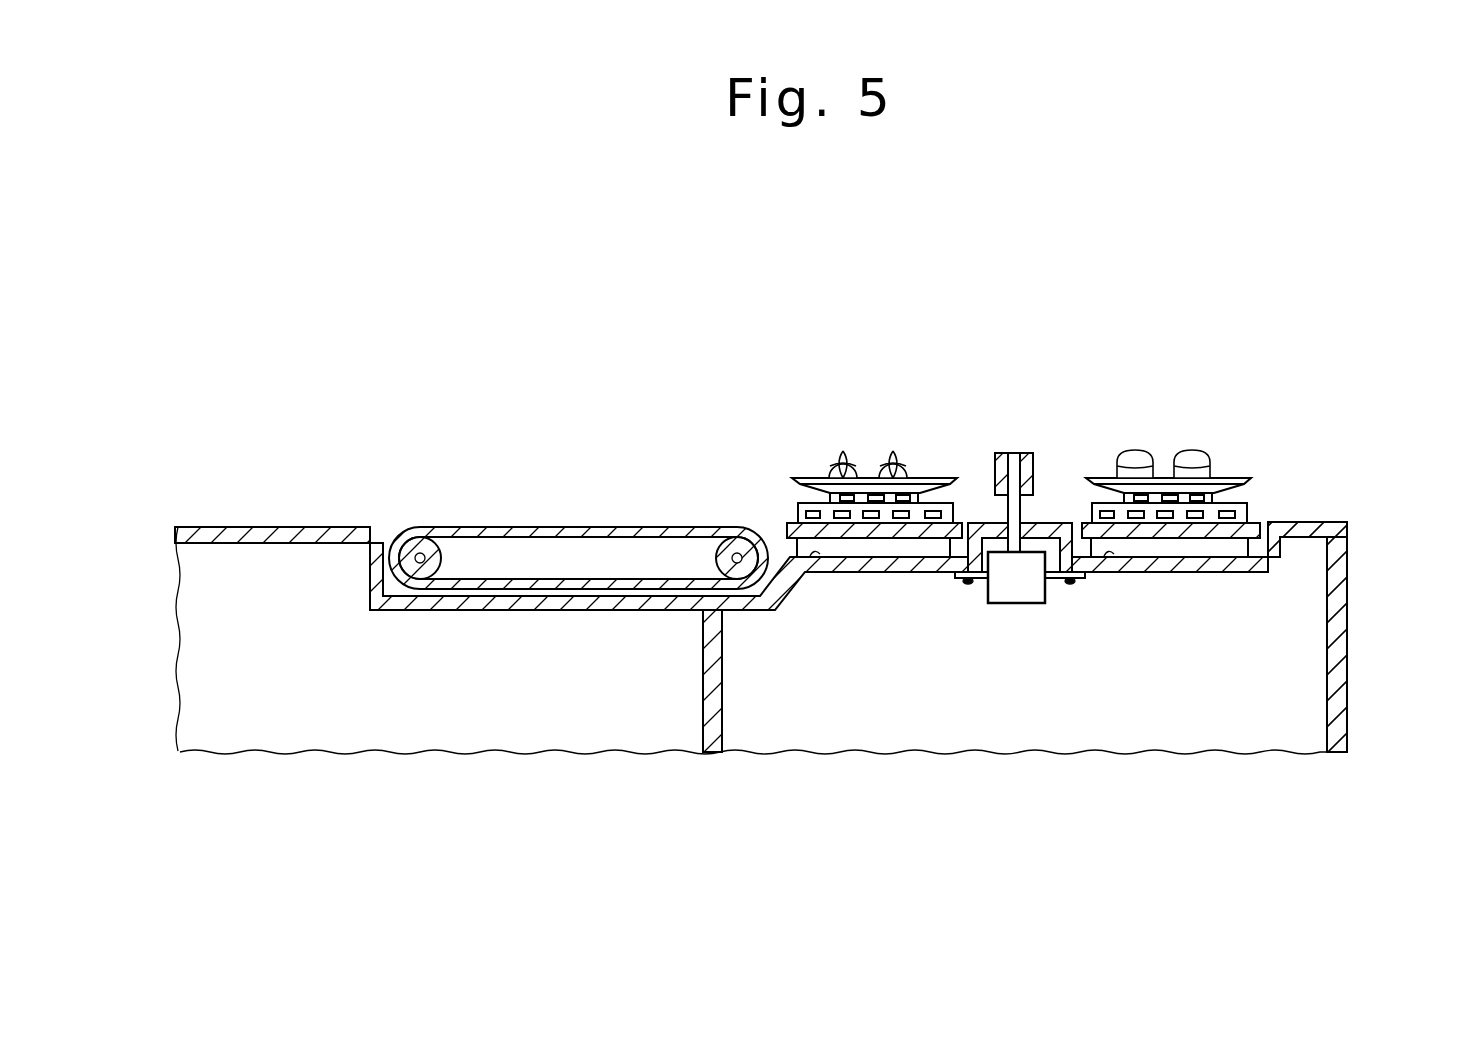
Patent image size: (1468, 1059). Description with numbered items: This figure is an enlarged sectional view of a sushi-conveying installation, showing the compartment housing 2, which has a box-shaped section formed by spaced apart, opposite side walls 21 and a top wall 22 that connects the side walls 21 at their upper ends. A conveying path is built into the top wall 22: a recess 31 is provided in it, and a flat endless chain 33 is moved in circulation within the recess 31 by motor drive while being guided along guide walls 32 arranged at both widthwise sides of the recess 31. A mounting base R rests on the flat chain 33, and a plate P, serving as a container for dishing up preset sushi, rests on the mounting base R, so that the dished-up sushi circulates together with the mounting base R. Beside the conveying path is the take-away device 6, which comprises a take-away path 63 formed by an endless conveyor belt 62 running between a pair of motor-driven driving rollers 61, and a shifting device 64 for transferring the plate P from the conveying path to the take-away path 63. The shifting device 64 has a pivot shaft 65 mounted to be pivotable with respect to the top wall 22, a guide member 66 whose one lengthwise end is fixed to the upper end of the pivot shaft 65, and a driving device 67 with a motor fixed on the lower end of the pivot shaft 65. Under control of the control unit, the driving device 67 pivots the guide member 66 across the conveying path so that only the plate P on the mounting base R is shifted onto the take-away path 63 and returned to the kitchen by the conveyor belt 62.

The compartment housing 2 is at (1356, 617).
The side walls 21 is at (714, 750).
The top wall 22 is at (1308, 522).
The recess 31 is at (872, 565).
The guide walls 32 is at (945, 560).
The flat endless chain 33 is at (817, 557).
The take-away device 6 is at (578, 449).
The driving rollers 61 is at (419, 553).
The endless conveyor belt 62 is at (641, 527).
The take-away path 63 is at (513, 512).
The shifting device 64 is at (1027, 536).
The pivot shaft 65 is at (1030, 500).
The guide member 66 is at (1024, 468).
The driving device 67 is at (1016, 590).
The plate P is at (930, 478).
The mounting base R is at (797, 480).